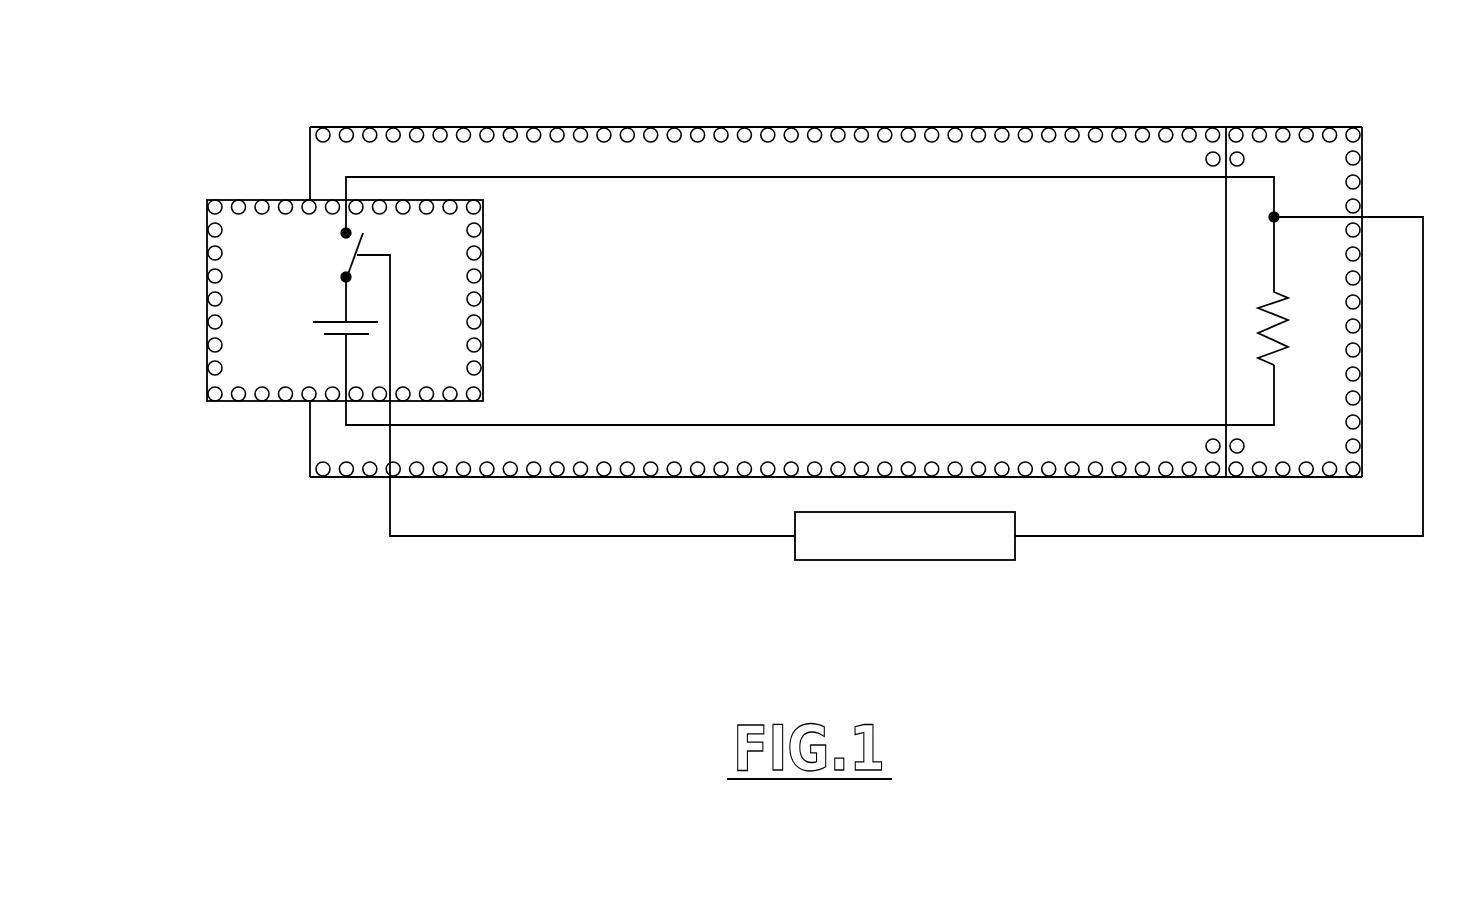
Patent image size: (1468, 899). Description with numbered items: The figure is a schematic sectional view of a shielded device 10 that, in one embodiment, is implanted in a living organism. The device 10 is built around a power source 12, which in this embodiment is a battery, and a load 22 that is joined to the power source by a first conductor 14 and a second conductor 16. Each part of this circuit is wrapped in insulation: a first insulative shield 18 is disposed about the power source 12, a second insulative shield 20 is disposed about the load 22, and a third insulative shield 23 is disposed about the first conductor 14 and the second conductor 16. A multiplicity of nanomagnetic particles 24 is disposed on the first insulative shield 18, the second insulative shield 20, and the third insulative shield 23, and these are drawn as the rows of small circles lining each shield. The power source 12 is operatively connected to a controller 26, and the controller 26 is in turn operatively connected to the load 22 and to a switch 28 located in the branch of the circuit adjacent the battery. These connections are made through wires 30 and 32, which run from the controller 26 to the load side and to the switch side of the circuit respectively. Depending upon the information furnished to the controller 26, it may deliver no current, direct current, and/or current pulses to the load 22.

The device 10 is at (736, 92).
The power source 12 is at (333, 322).
The first conductor 14 is at (773, 178).
The second conductor 16 is at (790, 420).
The first insulative shield 18 is at (270, 240).
The second insulative shield 20 is at (1337, 170).
The load 22 is at (1277, 293).
The third insulative shield 23 is at (646, 162).
The nanomagnetic particles 24 is at (410, 130).
The controller 26 is at (1017, 547).
The switch 28 is at (362, 243).
The wire 30 is at (1258, 539).
The wire 32 is at (528, 537).